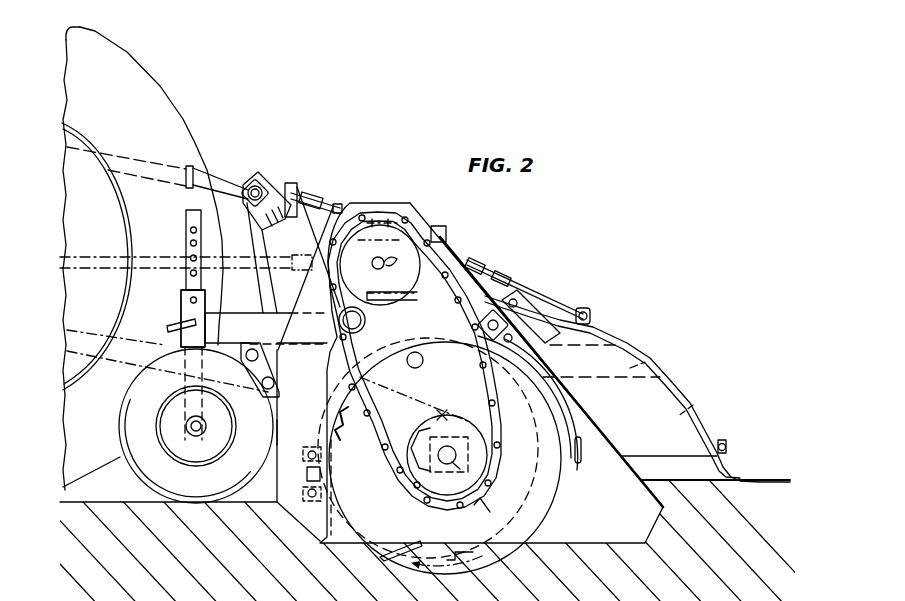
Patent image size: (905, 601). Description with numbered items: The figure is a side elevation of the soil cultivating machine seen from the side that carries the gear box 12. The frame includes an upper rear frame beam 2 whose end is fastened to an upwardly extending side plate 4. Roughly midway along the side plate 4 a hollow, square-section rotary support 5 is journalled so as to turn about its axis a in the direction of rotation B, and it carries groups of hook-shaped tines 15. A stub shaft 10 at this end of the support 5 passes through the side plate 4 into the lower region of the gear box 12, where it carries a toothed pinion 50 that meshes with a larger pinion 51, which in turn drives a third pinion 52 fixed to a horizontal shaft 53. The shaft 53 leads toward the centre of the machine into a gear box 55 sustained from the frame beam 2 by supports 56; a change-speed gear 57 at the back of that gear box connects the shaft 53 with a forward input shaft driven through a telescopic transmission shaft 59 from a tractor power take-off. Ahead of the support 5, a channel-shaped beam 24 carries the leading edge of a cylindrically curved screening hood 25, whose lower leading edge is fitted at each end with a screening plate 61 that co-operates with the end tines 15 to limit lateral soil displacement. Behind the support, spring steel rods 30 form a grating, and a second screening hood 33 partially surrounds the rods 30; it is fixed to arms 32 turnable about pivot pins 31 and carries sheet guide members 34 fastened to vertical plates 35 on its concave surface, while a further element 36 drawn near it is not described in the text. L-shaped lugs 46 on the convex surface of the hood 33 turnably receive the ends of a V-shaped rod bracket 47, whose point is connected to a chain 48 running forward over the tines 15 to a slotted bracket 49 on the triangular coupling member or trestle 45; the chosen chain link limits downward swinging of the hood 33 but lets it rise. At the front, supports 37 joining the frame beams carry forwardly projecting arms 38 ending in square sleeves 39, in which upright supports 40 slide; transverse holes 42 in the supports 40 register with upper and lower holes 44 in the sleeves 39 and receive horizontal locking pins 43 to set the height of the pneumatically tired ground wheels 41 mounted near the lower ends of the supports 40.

The frame beam 2 is at (337, 300).
The side plate 4 is at (597, 463).
The hollow support 5 is at (470, 457).
The stub shaft 10 is at (467, 462).
The gear box 12 is at (495, 513).
The hook-shaped tine 15 is at (420, 517).
The channel-shaped beam 24 is at (303, 467).
The screening hood or baffle 25 is at (277, 433).
The spring steel rod 30 is at (582, 423).
The pivot pin 31 is at (540, 278).
The arm 32 is at (532, 315).
The second screening hood or baffle 33 is at (640, 356).
The guide member 34 is at (693, 403).
The vertical plate 35 is at (660, 359).
The rear flap 36 is at (740, 476).
The support 37 is at (266, 355).
The arm 38 is at (224, 314).
The sleeve 39 is at (189, 299).
The upright support 40 is at (188, 213).
The ground wheel 41 is at (128, 397).
The transverse hole 42 is at (190, 230).
The locking pin 43 is at (170, 328).
The hole 44 is at (190, 301).
The coupling member or trestle 45 is at (262, 183).
The lug 46 is at (586, 311).
The rod-shaped bracket 47 is at (521, 292).
The chain 48 is at (338, 206).
The slotted bracket 49 is at (294, 185).
The toothed pinion 50 is at (442, 412).
The larger pinion 51 is at (377, 405).
The third pinion 52 is at (375, 210).
The shaft 53 is at (385, 265).
The gear box 55 is at (376, 203).
The support 56 is at (423, 360).
The change-speed gear 57 is at (440, 229).
The telescopic transmission shaft 59 is at (104, 257).
The screening plate 61 is at (428, 448).
The axis of rotation a is at (452, 452).
The direction of operative rotation B is at (448, 553).